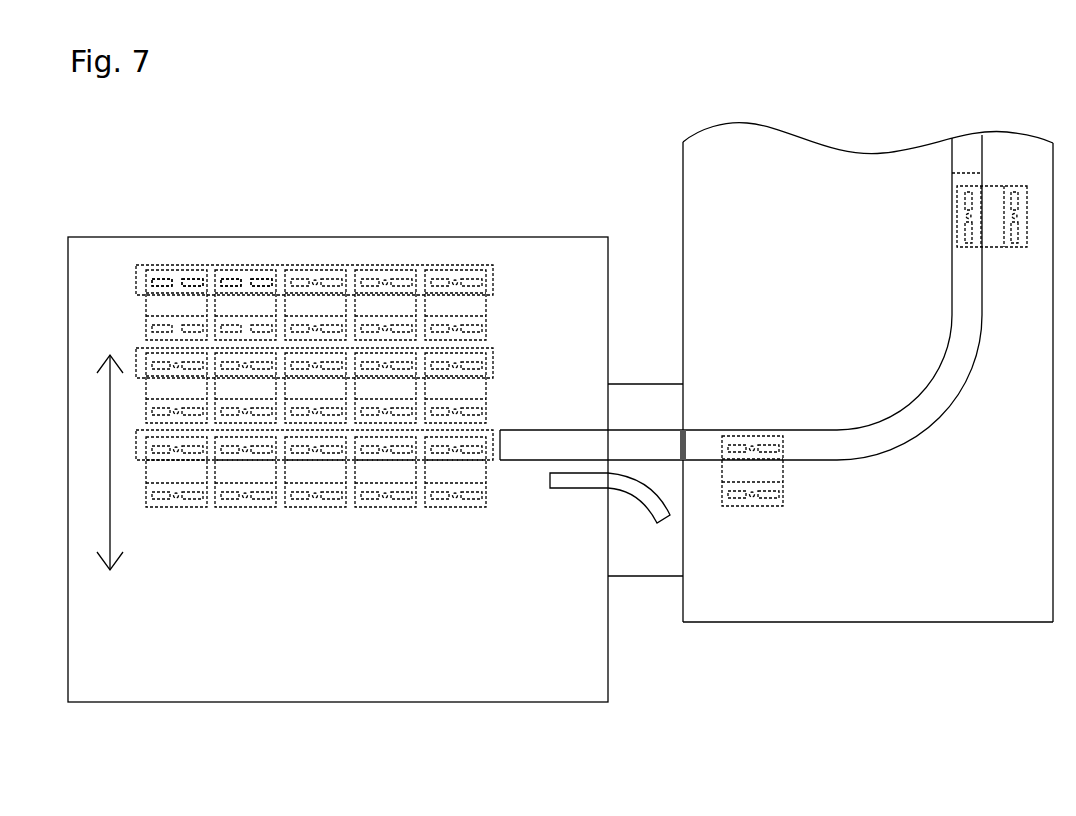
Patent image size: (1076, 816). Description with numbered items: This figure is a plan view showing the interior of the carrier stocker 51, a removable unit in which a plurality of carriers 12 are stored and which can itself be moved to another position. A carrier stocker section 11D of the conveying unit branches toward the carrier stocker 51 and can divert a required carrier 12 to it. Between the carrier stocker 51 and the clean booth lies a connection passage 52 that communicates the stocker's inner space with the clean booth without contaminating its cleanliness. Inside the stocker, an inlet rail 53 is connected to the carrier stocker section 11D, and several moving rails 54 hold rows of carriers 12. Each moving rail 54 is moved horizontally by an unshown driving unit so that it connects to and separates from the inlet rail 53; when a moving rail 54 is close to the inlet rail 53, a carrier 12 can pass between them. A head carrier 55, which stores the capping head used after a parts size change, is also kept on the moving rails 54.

The carrier stocker section 11D is at (885, 415).
The carrier 12 is at (318, 272).
The carrier stocker 51 is at (455, 706).
The connection passage 52 is at (845, 622).
The inlet rail 53 is at (543, 428).
The moving rail 54 is at (498, 273).
The head carrier 55 is at (177, 272).